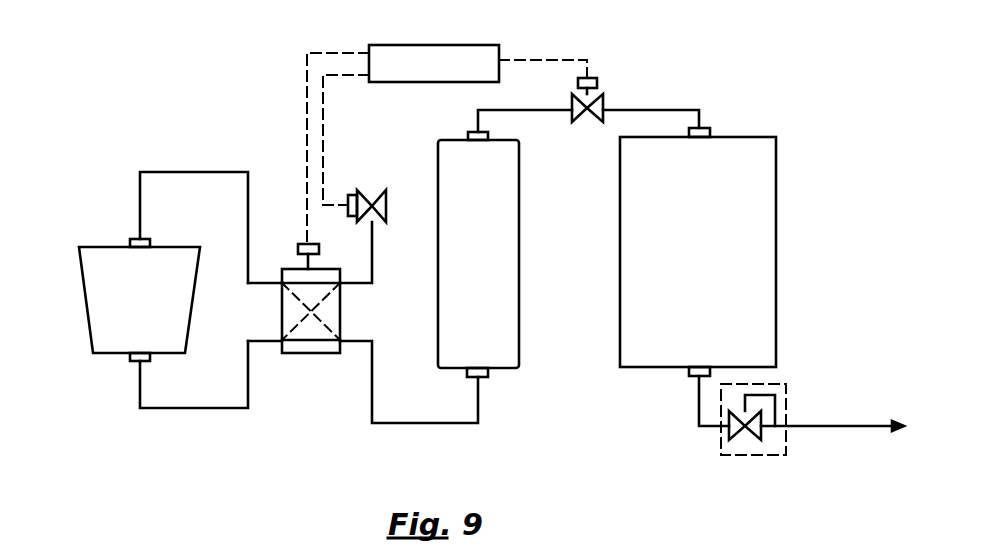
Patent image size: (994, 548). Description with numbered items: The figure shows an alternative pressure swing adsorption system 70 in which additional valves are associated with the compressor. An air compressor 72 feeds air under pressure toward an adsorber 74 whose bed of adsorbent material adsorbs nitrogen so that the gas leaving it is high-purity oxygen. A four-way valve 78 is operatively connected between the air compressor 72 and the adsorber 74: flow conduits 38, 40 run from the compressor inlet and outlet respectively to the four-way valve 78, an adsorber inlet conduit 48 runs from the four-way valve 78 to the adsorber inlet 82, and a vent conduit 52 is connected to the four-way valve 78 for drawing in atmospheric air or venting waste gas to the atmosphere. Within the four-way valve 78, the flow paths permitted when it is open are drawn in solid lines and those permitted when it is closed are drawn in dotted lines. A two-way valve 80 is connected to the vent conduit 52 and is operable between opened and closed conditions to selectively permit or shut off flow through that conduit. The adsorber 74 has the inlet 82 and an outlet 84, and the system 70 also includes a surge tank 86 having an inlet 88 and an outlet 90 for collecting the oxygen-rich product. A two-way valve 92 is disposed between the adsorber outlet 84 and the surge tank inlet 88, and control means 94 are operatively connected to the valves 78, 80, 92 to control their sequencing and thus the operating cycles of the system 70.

The flow conduit 38 is at (181, 170).
The flow conduit 40 is at (187, 410).
The adsorber inlet conduit 48 is at (453, 425).
The vent conduit 52 is at (375, 238).
The system 70 is at (716, 83).
The air compressor 72 is at (84, 306).
The adsorber 74 is at (520, 265).
The four-way valve 78 is at (308, 355).
The two-way valve 80 is at (381, 190).
The adsorber inlet 82 is at (490, 375).
The adsorber outlet 84 is at (467, 132).
The surge tank 86 is at (777, 264).
The surge tank inlet 88 is at (712, 126).
The surge tank outlet 90 is at (688, 373).
The two-way valve 92 is at (605, 96).
The control means 94 is at (462, 44).